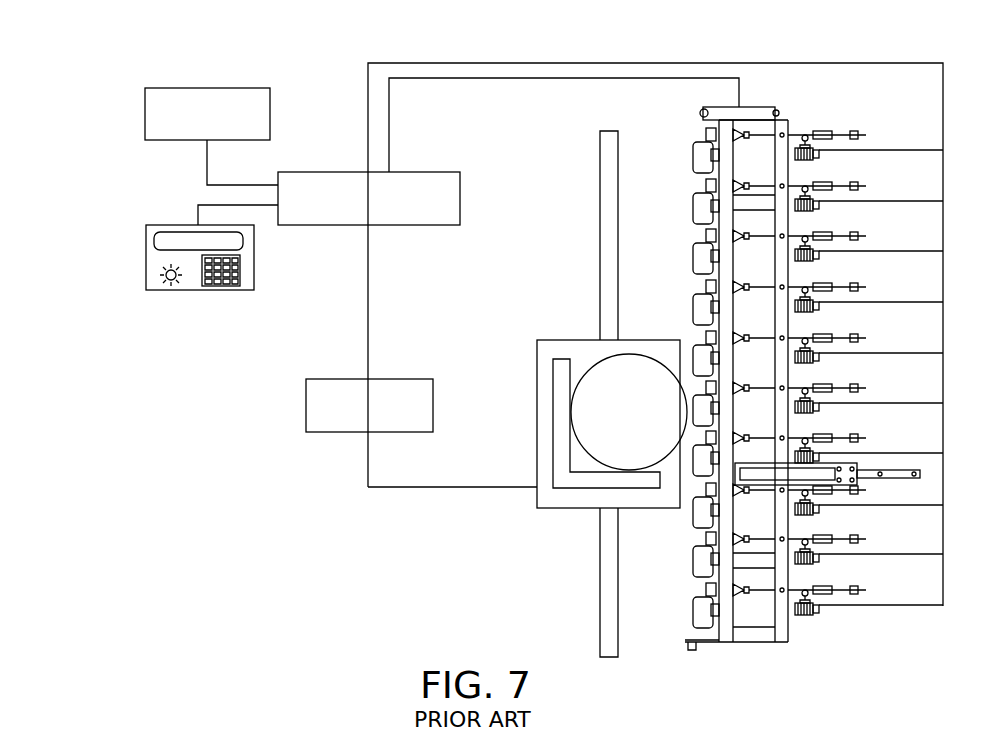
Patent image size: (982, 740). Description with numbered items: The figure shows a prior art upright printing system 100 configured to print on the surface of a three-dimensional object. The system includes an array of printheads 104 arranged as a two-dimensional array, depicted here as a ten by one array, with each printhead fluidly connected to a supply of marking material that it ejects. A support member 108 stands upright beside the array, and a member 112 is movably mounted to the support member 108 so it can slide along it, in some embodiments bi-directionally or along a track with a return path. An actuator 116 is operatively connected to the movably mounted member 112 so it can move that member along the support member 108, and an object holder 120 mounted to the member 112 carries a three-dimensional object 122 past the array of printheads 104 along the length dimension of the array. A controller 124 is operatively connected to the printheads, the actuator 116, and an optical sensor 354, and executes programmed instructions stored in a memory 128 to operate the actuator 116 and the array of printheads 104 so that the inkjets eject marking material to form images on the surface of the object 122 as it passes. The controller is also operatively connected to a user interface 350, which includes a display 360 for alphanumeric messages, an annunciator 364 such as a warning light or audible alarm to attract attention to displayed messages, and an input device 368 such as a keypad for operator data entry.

The printing system 100 is at (310, 46).
The array of printheads 104 is at (676, 229).
The support member 108 is at (600, 566).
The member 112 is at (537, 462).
The actuator 116 is at (340, 433).
The object holder 120 is at (553, 395).
The 3D object 122 is at (592, 368).
The controller 124 is at (413, 226).
The memory 128 is at (145, 112).
The user interface 350 is at (190, 291).
The optical sensor 354 is at (762, 107).
The display 360 is at (173, 232).
The annunciator 364 is at (165, 283).
The input device 368 is at (230, 287).